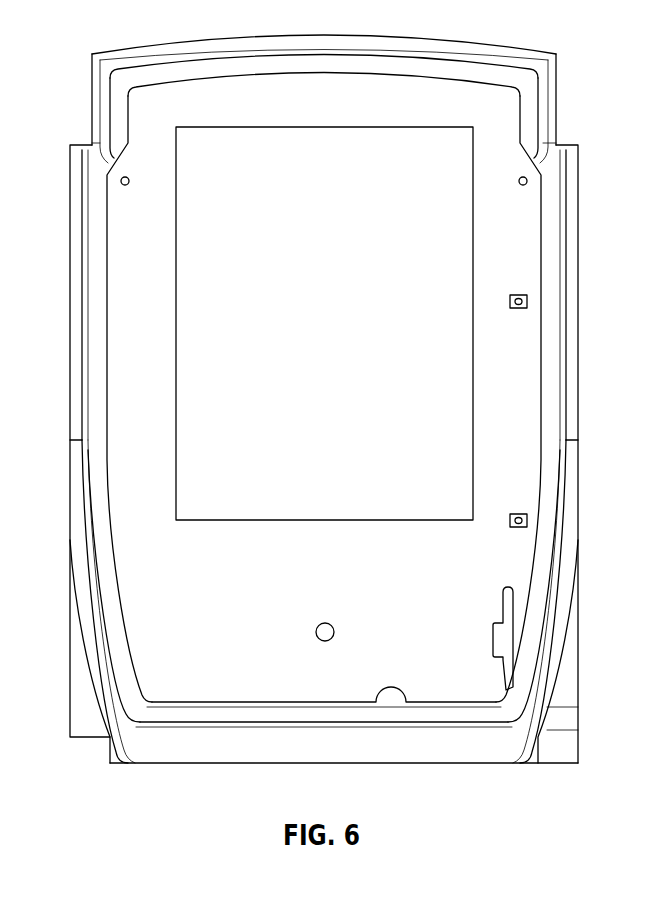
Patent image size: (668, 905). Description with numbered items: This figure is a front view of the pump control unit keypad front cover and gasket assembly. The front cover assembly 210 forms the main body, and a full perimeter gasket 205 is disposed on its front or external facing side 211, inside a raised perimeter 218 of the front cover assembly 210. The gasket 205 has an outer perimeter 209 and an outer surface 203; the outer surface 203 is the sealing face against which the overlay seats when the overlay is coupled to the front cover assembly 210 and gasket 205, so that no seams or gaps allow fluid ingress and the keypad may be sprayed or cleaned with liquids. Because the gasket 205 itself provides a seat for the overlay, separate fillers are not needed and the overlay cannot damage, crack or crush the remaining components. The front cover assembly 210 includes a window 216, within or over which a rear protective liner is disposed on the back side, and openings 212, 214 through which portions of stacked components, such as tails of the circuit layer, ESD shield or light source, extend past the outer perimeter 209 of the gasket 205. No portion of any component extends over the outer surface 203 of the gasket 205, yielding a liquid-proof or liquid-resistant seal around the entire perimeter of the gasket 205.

The outer surface 203 is at (128, 78).
The front cover assembly 210 is at (547, 78).
The raised perimeter 218 is at (78, 190).
The outer perimeter 209 is at (88, 272).
The gasket 205 is at (548, 305).
The window 216 is at (395, 400).
The front or external facing side 211 is at (165, 600).
The opening 212 is at (503, 645).
The opening 214 is at (397, 697).